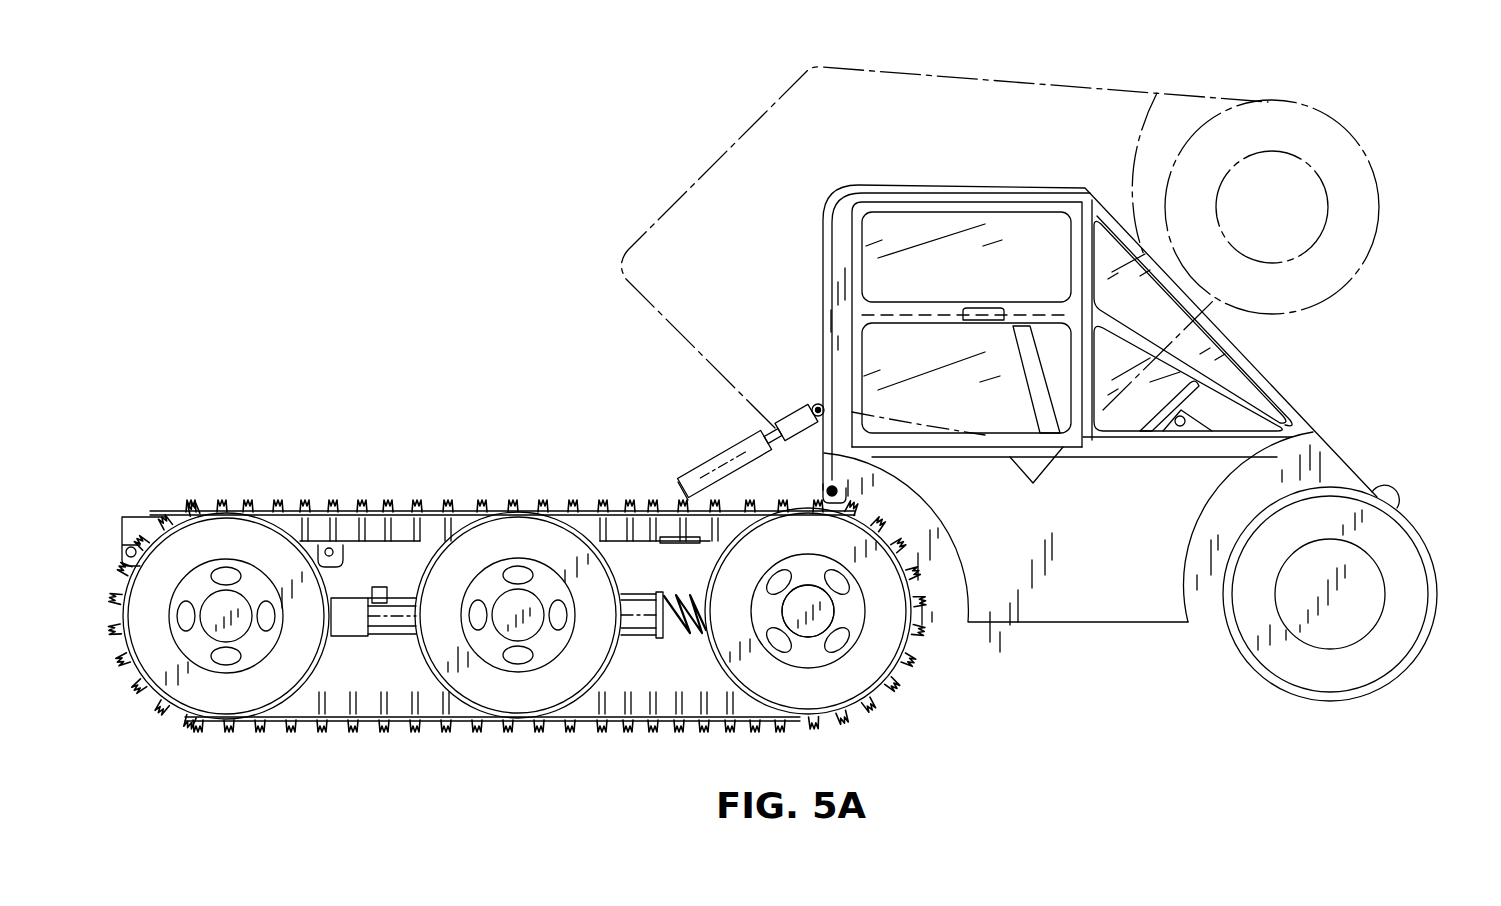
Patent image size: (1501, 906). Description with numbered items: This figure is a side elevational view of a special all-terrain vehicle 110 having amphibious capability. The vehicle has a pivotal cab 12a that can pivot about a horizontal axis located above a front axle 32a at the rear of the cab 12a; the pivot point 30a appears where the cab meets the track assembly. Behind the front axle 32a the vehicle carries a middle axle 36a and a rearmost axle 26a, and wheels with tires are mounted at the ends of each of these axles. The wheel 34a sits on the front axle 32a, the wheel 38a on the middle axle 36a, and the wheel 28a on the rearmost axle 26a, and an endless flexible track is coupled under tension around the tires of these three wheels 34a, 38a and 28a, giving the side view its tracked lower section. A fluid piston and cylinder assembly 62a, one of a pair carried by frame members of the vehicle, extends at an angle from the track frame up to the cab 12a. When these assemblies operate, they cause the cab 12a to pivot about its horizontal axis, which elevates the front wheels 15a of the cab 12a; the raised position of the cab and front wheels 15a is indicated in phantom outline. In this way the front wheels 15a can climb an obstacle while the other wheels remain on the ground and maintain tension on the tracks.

The tracked vehicle 110 is at (560, 281).
The pivotal cab 12a is at (942, 184).
The front wheels 15a is at (1372, 246).
The rearmost axle 26a is at (230, 600).
The wheel 28a is at (236, 538).
The pivot 30a is at (838, 491).
The front axle 32a is at (833, 600).
The wheel 34a is at (886, 600).
The middle axle 36a is at (522, 600).
The wheel 38a is at (556, 535).
The fluid piston and cylinder assembly 62a is at (733, 461).